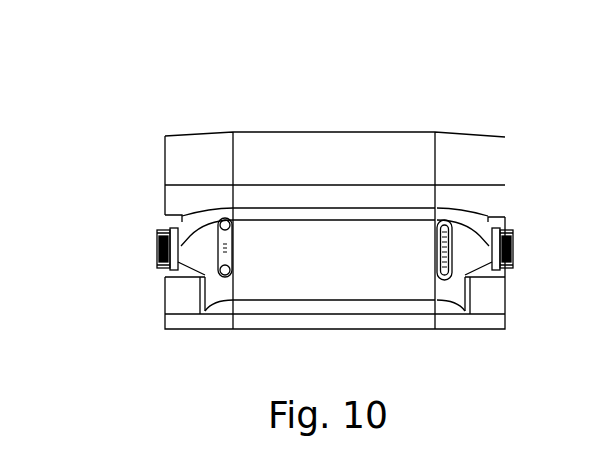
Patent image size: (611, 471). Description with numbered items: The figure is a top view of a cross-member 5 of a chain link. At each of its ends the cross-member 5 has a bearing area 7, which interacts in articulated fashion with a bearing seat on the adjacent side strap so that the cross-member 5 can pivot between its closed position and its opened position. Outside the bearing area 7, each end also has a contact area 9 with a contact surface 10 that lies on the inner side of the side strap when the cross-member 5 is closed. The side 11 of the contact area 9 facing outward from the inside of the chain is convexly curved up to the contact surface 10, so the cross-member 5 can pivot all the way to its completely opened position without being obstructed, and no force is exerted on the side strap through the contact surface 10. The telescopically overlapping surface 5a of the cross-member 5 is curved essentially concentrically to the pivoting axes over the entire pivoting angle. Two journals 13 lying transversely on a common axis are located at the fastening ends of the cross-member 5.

The cross-member 5 is at (455, 346).
The telescopically overlapping surface 5a is at (330, 148).
The bearing area 7 is at (146, 245).
The contact area 9 is at (203, 132).
The contact surface 10 is at (165, 193).
The side of contact area 11 is at (335, 259).
The journal 13 is at (160, 222).